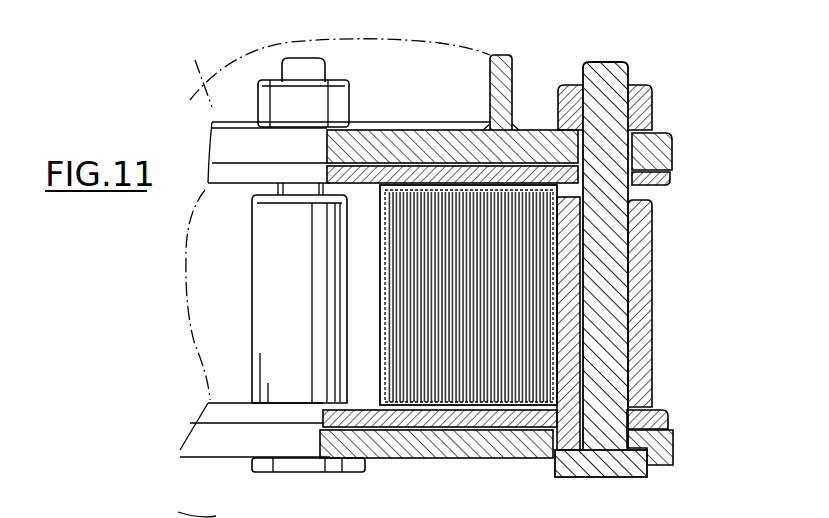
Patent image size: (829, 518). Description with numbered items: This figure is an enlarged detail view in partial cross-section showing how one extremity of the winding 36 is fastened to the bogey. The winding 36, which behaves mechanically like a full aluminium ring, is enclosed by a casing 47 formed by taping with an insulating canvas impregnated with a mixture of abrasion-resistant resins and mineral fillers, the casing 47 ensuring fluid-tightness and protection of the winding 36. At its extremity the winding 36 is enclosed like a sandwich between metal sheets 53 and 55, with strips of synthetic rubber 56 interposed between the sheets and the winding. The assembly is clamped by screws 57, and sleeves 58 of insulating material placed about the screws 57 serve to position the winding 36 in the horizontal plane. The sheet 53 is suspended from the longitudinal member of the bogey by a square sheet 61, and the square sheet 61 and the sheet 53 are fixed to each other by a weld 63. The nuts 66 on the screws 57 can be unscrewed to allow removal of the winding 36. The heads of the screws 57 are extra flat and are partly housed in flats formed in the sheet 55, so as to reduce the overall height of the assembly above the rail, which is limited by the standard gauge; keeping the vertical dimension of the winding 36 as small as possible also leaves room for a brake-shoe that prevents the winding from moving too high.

The winding 36 is at (455, 383).
The casing 47 is at (510, 430).
The metal sheet 53 is at (672, 140).
The metal sheet 55 is at (673, 448).
The strip of synthetic rubber 56 is at (667, 185).
The screw 57 is at (302, 70).
The sleeve 58 is at (295, 313).
The square sheet 61 is at (500, 67).
The weld 63 is at (513, 129).
The nut 66 is at (267, 107).